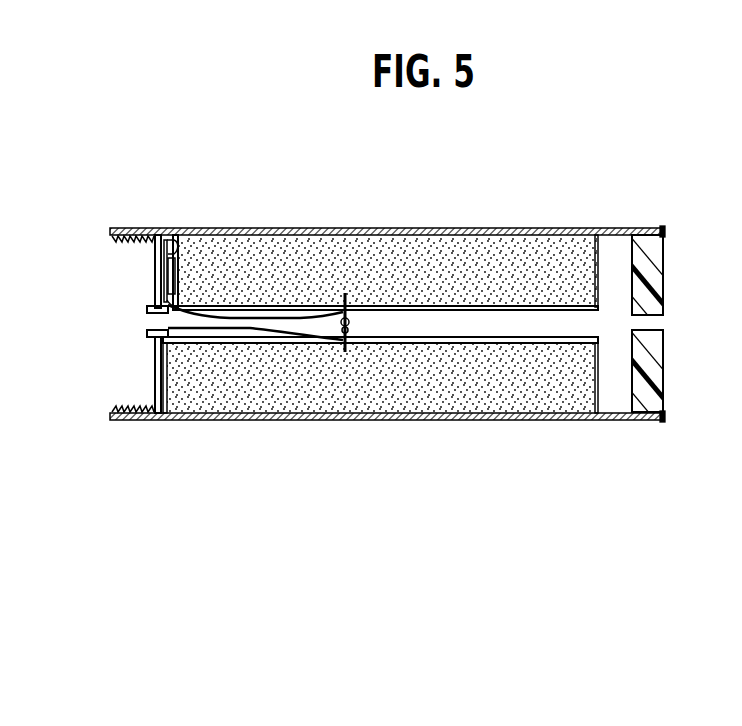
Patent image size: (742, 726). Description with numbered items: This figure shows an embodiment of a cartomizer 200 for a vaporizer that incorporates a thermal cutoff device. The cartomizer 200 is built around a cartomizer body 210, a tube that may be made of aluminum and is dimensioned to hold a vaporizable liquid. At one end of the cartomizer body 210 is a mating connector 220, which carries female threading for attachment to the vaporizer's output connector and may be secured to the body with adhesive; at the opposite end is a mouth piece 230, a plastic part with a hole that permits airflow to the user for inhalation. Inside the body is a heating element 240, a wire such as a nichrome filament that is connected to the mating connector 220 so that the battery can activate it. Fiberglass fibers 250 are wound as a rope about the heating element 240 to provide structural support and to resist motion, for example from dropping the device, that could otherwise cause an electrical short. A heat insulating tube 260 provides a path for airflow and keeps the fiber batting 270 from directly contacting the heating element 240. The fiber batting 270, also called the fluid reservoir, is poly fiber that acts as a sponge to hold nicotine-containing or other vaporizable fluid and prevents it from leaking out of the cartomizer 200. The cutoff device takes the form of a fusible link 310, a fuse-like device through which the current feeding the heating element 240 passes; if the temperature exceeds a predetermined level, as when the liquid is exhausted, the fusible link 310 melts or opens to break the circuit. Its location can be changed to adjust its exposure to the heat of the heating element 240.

The cartomizer 200 is at (257, 205).
The cartomizer body 210 is at (313, 228).
The mating connector 220 is at (128, 228).
The mouth piece 230 is at (665, 272).
The heating element 240 is at (305, 340).
The fiberglass fibers 250 is at (346, 350).
The heat insulating tube 260 is at (542, 347).
The fiber batting 270 is at (392, 383).
The fusible link 310 is at (172, 228).